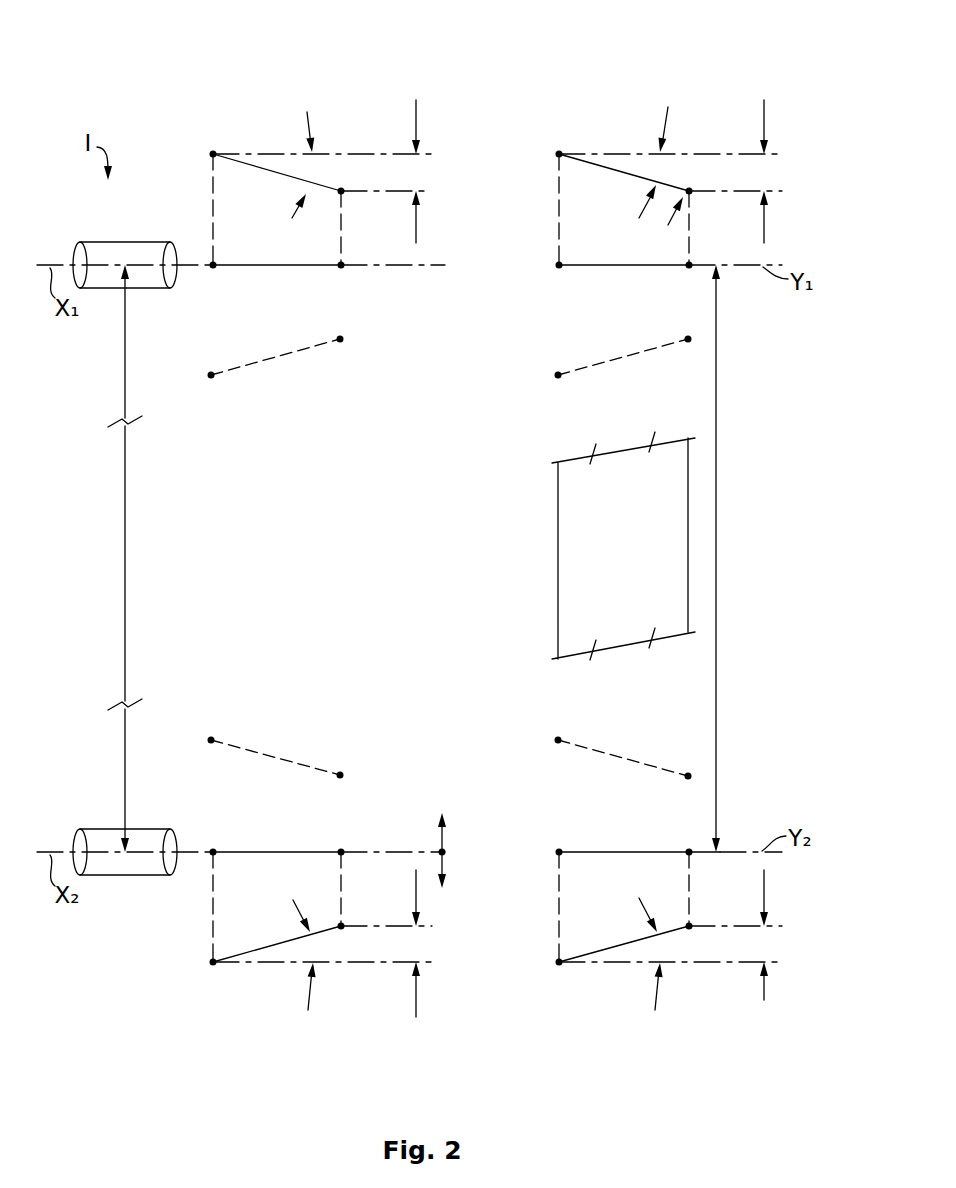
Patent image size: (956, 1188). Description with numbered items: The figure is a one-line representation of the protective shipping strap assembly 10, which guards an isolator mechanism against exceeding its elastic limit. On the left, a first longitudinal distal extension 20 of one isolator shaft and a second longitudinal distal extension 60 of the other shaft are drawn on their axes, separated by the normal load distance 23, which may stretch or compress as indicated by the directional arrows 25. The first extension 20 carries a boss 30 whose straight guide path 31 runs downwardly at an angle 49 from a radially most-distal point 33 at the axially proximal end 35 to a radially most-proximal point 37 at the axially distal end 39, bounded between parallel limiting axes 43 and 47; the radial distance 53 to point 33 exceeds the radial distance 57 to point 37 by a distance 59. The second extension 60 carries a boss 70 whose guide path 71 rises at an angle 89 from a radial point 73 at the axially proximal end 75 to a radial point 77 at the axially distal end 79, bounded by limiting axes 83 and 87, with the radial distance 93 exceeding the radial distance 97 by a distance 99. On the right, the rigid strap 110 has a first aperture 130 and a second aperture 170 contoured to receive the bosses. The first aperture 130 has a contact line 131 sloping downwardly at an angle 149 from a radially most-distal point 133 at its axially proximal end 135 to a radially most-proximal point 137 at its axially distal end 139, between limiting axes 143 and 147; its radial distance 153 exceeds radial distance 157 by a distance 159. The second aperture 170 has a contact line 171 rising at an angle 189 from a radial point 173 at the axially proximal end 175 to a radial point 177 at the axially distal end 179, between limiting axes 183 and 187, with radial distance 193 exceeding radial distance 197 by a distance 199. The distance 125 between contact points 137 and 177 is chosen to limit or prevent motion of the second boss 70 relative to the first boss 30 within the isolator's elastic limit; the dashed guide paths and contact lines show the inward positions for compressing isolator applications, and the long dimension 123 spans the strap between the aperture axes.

The protective shipping strap assembly 10 is at (315, 549).
The first longitudinal distal extension 20 is at (125, 242).
The normal load distance 23 is at (123, 552).
The directional arrows 25 is at (438, 851).
The boss 30 is at (286, 78).
The guide path 31 is at (300, 188).
The radially most-distal point 33 is at (212, 153).
The axially proximal end 35 is at (214, 267).
The radially most-proximal point 37 is at (344, 190).
The axially distal end 39 is at (340, 267).
The limiting axis 43 is at (260, 153).
The limiting axis 47 is at (412, 192).
The angle 49 is at (321, 118).
The radial distance 53 is at (212, 210).
The radial distance 57 is at (344, 230).
The distance 59 is at (416, 112).
The second longitudinal distal extension 60 is at (126, 876).
The boss 70 is at (283, 1040).
The guide path 71 is at (300, 937).
The radial point 73 is at (212, 964).
The axially proximal end 75 is at (214, 850).
The radial point 77 is at (344, 929).
The axially distal end 79 is at (340, 850).
The limiting axis 83 is at (262, 963).
The limiting axis 87 is at (414, 928).
The angle 89 is at (323, 999).
The radial distance 93 is at (212, 905).
The radial distance 97 is at (344, 886).
The distance 99 is at (414, 1002).
The rigid strap 110 is at (554, 558).
The axial distance between mating reference axes 123 is at (718, 556).
The distance 125 is at (766, 228).
The first aperture 130 is at (633, 80).
The contact line 131 is at (648, 179).
The radially most-distal point 133 is at (558, 153).
The axially proximal end 135 is at (560, 267).
The radially most-proximal point 137 is at (666, 221).
The axially distal end 139 is at (688, 267).
The limiting axis 143 is at (604, 153).
The limiting axis 147 is at (760, 192).
The angle 149 is at (670, 115).
The radial distance 153 is at (558, 210).
The radial distance 157 is at (692, 228).
The distance 159 is at (764, 100).
The second aperture 170 is at (630, 1040).
The contact line 171 is at (645, 937).
The radial point 173 is at (558, 964).
The axially proximal end 175 is at (560, 850).
The radial point 177 is at (692, 929).
The axially distal end 179 is at (688, 850).
The limiting axis 183 is at (604, 963).
The limiting axis 187 is at (762, 928).
The angle 189 is at (673, 1000).
The radial distance 193 is at (558, 905).
The radial distance 197 is at (688, 884).
The distance 199 is at (764, 1002).